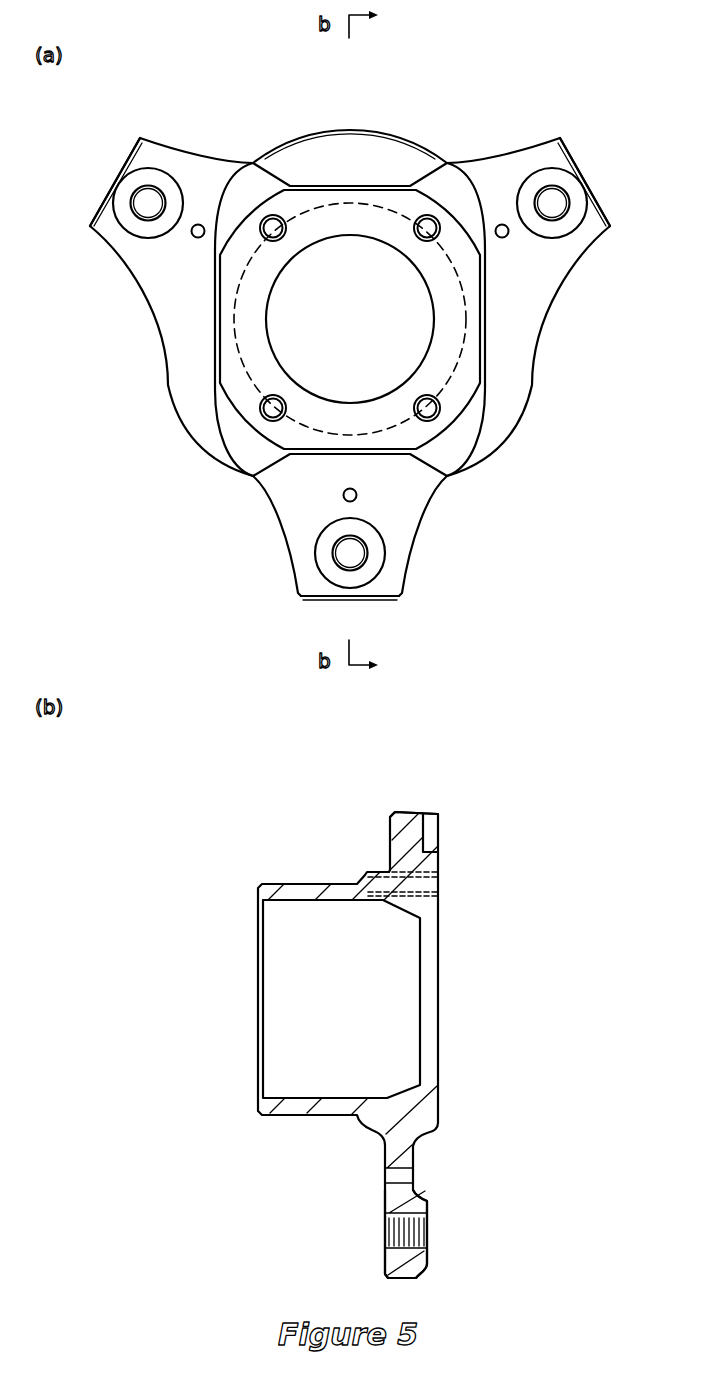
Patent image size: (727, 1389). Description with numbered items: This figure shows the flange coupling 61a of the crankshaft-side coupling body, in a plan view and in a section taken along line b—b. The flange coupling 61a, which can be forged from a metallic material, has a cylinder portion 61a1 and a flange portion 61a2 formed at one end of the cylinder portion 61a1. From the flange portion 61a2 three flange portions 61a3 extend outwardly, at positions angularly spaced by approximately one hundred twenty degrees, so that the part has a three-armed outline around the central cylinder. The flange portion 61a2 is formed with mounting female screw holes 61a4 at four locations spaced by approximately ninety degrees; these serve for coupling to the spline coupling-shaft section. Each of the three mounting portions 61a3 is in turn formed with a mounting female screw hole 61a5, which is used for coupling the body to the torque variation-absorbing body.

The flange coupling 61a is at (434, 106).
The cylinder portion 61a1 is at (237, 338).
The flange portion 61a2 is at (332, 152).
The flange portion 61a3 is at (152, 157).
The mounting female screw hole 61a4 is at (268, 216).
The mounting female screw hole 61a5 is at (558, 200).